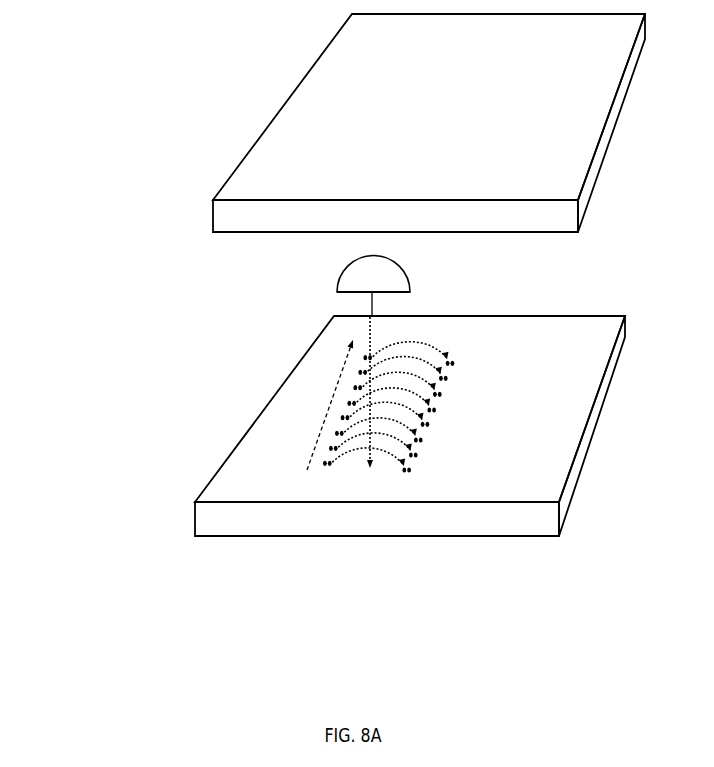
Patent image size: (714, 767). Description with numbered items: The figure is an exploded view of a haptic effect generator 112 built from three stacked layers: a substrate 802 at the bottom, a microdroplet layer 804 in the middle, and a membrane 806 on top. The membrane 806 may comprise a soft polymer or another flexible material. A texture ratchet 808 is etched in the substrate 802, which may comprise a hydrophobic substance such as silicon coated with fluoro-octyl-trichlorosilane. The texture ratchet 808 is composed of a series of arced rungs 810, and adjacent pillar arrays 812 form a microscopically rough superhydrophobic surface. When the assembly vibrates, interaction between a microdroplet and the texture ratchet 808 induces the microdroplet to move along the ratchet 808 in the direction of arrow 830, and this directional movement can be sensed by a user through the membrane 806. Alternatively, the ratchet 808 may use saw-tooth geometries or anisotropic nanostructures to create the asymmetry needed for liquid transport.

The haptic effect generator 112 is at (140, 325).
The substrate 802 is at (548, 352).
The microdroplet layer 804 is at (281, 250).
The membrane 806 is at (422, 108).
The texture ratchet 808 is at (401, 486).
The arced rungs 810 is at (433, 343).
The pillar arrays 812 is at (401, 485).
The arrow 830 is at (338, 378).